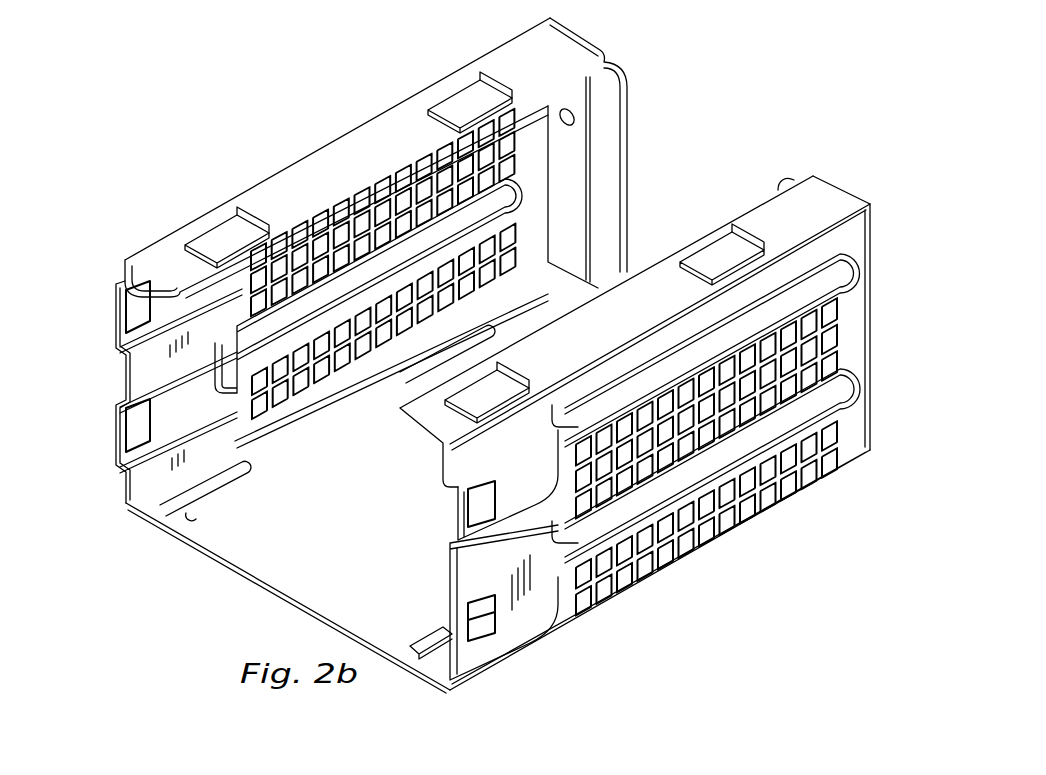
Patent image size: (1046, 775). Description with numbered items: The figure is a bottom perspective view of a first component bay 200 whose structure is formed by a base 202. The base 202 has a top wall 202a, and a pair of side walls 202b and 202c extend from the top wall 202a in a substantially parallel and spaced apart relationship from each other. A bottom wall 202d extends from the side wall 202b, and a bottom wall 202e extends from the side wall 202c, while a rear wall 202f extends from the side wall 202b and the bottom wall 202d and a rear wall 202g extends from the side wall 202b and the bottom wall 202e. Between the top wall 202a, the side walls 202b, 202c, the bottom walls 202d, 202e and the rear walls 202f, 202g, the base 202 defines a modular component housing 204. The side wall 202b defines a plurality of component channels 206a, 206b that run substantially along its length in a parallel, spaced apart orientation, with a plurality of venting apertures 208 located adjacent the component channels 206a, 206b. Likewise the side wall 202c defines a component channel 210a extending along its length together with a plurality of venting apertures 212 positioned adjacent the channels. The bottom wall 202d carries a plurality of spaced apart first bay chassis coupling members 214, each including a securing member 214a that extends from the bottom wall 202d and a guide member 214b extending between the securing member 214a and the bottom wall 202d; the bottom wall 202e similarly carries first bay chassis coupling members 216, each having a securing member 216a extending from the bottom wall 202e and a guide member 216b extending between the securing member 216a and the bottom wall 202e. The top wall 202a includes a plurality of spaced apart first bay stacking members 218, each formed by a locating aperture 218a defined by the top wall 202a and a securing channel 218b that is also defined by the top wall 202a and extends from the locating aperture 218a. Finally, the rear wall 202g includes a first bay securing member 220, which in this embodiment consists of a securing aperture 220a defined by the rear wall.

The first component bay 200 is at (737, 70).
The base 202 is at (145, 522).
The top wall 202a is at (264, 566).
The side wall 202b is at (447, 570).
The side wall 202c is at (122, 268).
The bottom wall 202d is at (440, 432).
The bottom wall 202e is at (155, 260).
The rear wall 202f is at (792, 172).
The rear wall 202g is at (624, 82).
The modular component housing 204 is at (308, 587).
The component channel 206a is at (848, 392).
The component channel 206b is at (850, 283).
The venting apertures 208 is at (847, 348).
The component channel 210a is at (367, 287).
The venting apertures 212 is at (347, 213).
The first bay chassis coupling member 214 is at (698, 230).
The securing member 214a is at (717, 250).
The guide member 214b is at (778, 222).
The first bay chassis coupling member 216 is at (445, 76).
The securing member 216a is at (455, 100).
The guide member 216b is at (488, 90).
The first bay stacking member 218 is at (503, 320).
The locating aperture 218a is at (433, 350).
The securing channel 218b is at (490, 340).
The first bay securing member 220 is at (602, 115).
The securing aperture 220a is at (575, 125).